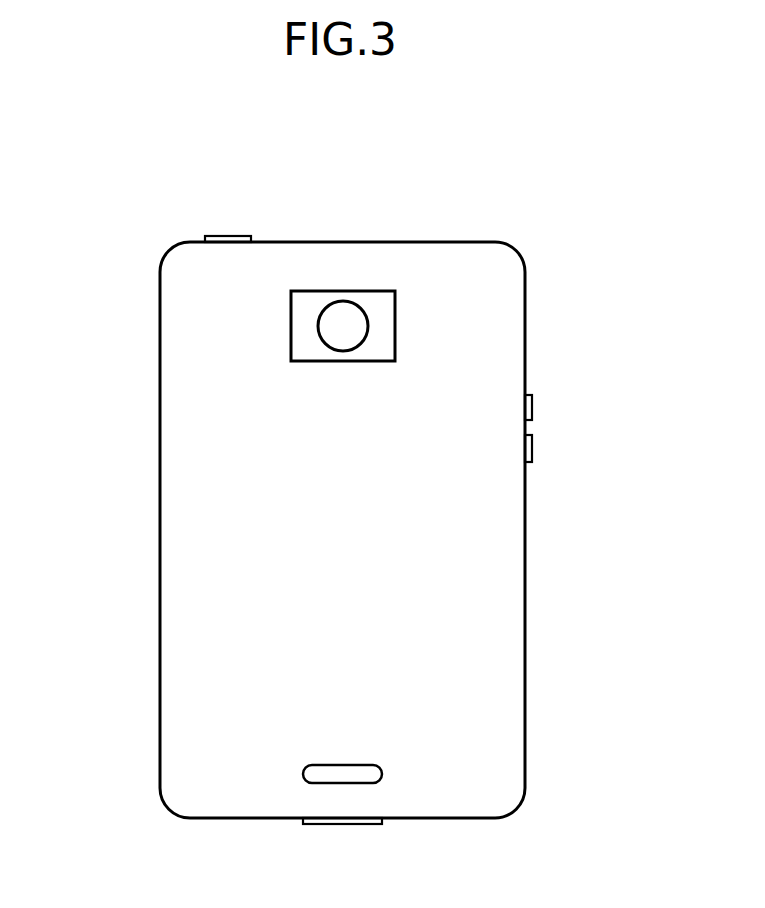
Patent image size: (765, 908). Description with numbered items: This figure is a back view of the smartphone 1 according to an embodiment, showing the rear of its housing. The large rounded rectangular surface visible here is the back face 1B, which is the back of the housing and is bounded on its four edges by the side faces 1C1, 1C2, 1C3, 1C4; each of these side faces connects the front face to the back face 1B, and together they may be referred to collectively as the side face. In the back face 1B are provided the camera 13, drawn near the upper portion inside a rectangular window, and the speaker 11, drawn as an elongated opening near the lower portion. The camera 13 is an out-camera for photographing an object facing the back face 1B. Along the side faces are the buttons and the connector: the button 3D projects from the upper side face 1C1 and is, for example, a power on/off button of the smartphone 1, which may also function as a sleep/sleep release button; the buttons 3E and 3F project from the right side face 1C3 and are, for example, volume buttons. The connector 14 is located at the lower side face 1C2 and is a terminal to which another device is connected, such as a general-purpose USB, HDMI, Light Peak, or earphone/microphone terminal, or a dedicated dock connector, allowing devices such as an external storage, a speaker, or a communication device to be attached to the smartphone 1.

The smartphone 1 is at (538, 216).
The back face 1B is at (188, 489).
The side face 1C1 is at (435, 242).
The side face 1C2 is at (450, 818).
The side face 1C3 is at (527, 670).
The side face 1C4 is at (160, 617).
The button 3D is at (225, 236).
The button 3E is at (533, 407).
The button 3F is at (533, 448).
The speaker 11 is at (303, 775).
The camera 13 is at (342, 325).
The connector 14 is at (335, 824).